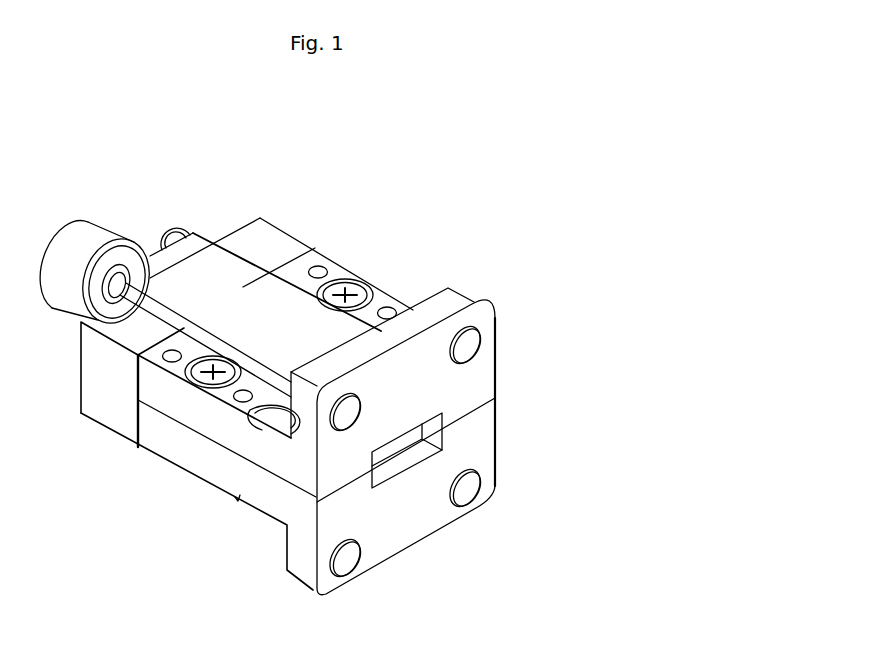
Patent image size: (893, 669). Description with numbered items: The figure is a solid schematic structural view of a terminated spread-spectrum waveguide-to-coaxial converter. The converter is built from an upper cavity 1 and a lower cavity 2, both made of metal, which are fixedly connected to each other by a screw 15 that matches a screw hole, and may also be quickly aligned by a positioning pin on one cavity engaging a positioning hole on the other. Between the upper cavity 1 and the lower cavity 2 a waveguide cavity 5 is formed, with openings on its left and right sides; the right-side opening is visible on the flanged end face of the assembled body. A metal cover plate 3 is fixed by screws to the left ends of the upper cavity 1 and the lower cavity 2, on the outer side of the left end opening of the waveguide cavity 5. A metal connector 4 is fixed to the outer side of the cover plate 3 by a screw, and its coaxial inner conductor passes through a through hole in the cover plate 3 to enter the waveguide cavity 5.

The upper cavity 1 is at (498, 343).
The lower cavity 2 is at (498, 442).
The cover plate 3 is at (285, 226).
The connector 4 is at (95, 210).
The waveguide cavity 5 is at (400, 458).
The screw 15 is at (350, 290).